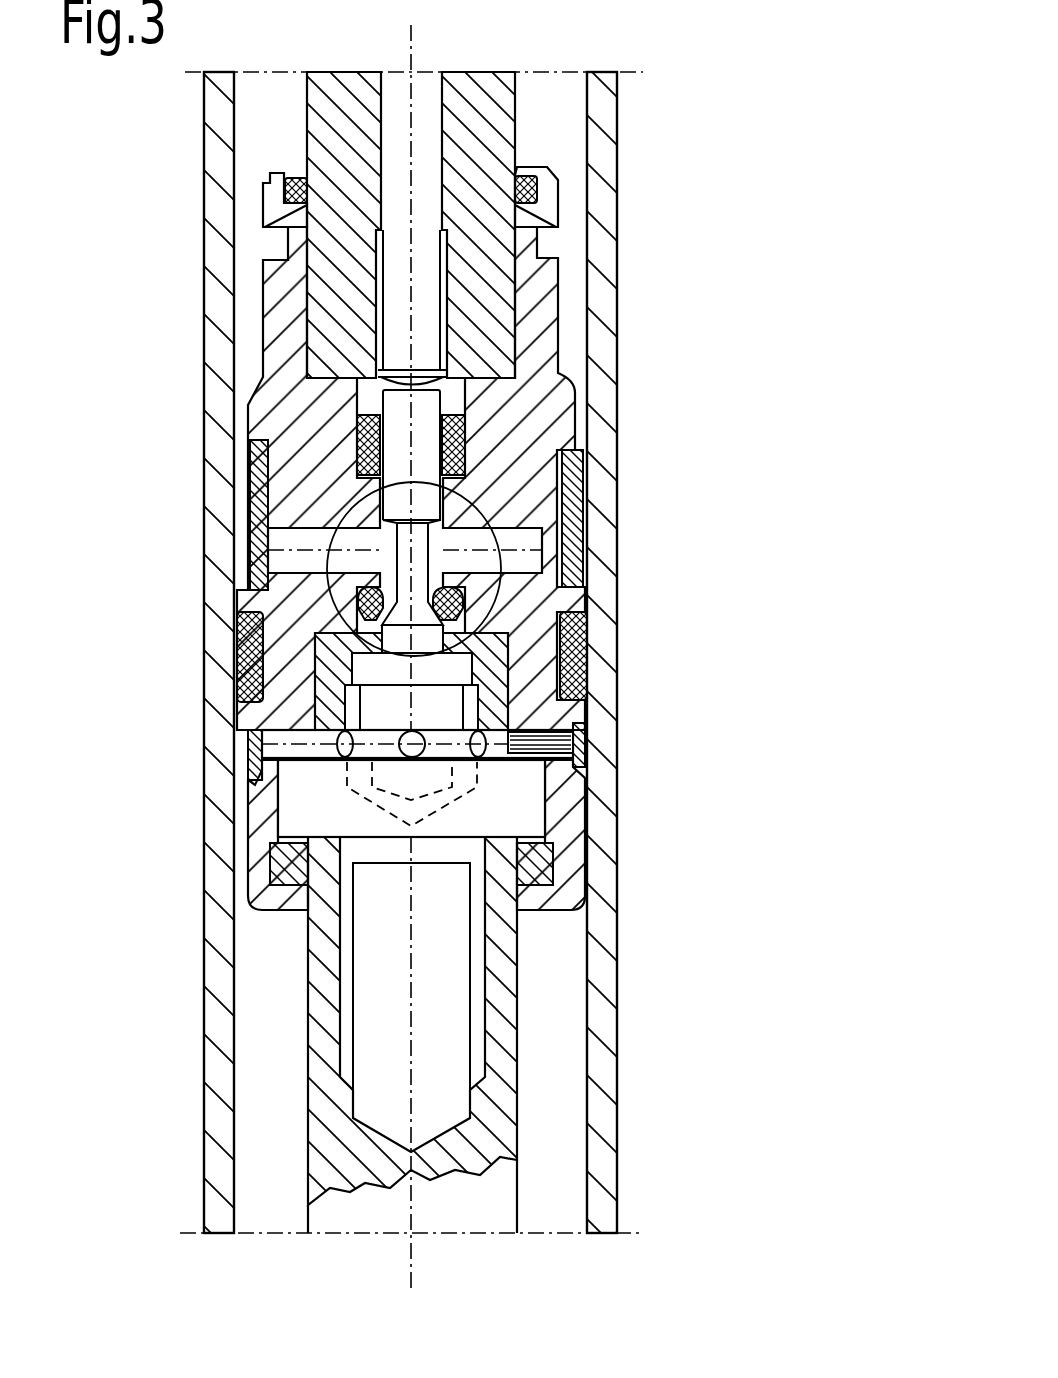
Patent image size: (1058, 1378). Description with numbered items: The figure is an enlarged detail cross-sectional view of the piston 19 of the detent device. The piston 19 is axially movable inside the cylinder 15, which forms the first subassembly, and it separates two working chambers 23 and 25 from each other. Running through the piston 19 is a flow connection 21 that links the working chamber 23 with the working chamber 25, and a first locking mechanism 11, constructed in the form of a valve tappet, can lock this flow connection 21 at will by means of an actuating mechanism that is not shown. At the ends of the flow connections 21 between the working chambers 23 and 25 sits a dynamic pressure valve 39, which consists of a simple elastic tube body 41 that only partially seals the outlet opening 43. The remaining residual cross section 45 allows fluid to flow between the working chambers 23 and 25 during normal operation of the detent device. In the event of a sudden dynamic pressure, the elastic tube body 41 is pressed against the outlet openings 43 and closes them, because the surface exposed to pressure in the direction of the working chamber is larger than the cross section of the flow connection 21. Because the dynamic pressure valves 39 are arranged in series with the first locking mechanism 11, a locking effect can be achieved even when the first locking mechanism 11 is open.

The first locking mechanism 11 is at (345, 527).
The cylinder 15 is at (603, 208).
The piston 19 is at (563, 353).
The flow connection 21 is at (478, 498).
The working chamber 23 is at (567, 110).
The working chamber 25 is at (577, 938).
The dynamic pressure valve 39 is at (248, 753).
The elastic tube body 41 is at (575, 493).
The outlet opening 43 is at (583, 576).
The residual cross section 45 is at (560, 447).